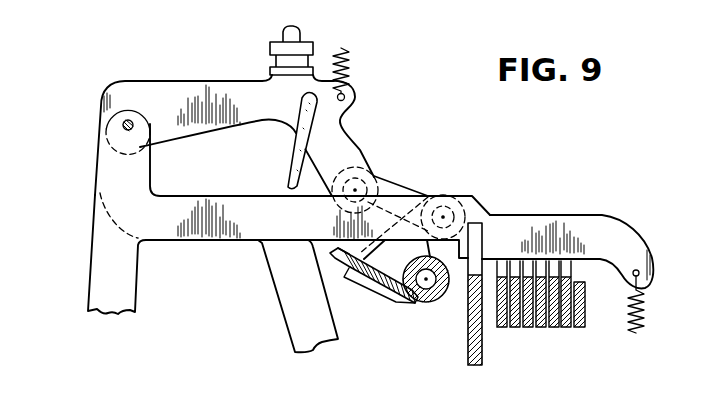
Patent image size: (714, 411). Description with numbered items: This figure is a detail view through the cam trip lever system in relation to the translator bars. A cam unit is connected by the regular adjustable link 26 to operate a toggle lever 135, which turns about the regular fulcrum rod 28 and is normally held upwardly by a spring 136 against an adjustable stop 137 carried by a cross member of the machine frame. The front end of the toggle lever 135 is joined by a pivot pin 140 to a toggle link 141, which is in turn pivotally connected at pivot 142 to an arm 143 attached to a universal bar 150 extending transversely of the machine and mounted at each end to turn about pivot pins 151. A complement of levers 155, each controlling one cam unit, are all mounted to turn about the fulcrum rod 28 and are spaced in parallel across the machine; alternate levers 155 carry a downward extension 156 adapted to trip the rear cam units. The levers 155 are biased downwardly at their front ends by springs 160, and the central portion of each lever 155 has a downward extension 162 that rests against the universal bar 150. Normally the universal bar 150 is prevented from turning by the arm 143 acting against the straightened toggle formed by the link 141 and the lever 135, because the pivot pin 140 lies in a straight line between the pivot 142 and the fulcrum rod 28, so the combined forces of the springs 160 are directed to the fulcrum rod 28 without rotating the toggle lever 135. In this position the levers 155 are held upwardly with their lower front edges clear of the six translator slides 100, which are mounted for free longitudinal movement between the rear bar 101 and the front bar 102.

The adjustable link 26 is at (293, 163).
The fulcrum rod 28 is at (122, 127).
The translator slides 100 is at (566, 328).
The rear bar 101 is at (467, 365).
The front bar 102 is at (587, 329).
The toggle lever 135 is at (340, 135).
The spring 136 is at (352, 55).
The adjustable stop 137 is at (312, 43).
The pivot pin 140 is at (357, 186).
The toggle link 141 is at (397, 188).
The pivot 142 is at (463, 197).
The arm 143 is at (373, 293).
The universal bar 150 is at (340, 252).
The pivot pins 151 is at (425, 302).
The levers 155 is at (563, 217).
The downward extension 156 is at (103, 273).
The springs 160 is at (648, 307).
The downward extension 162 is at (381, 291).